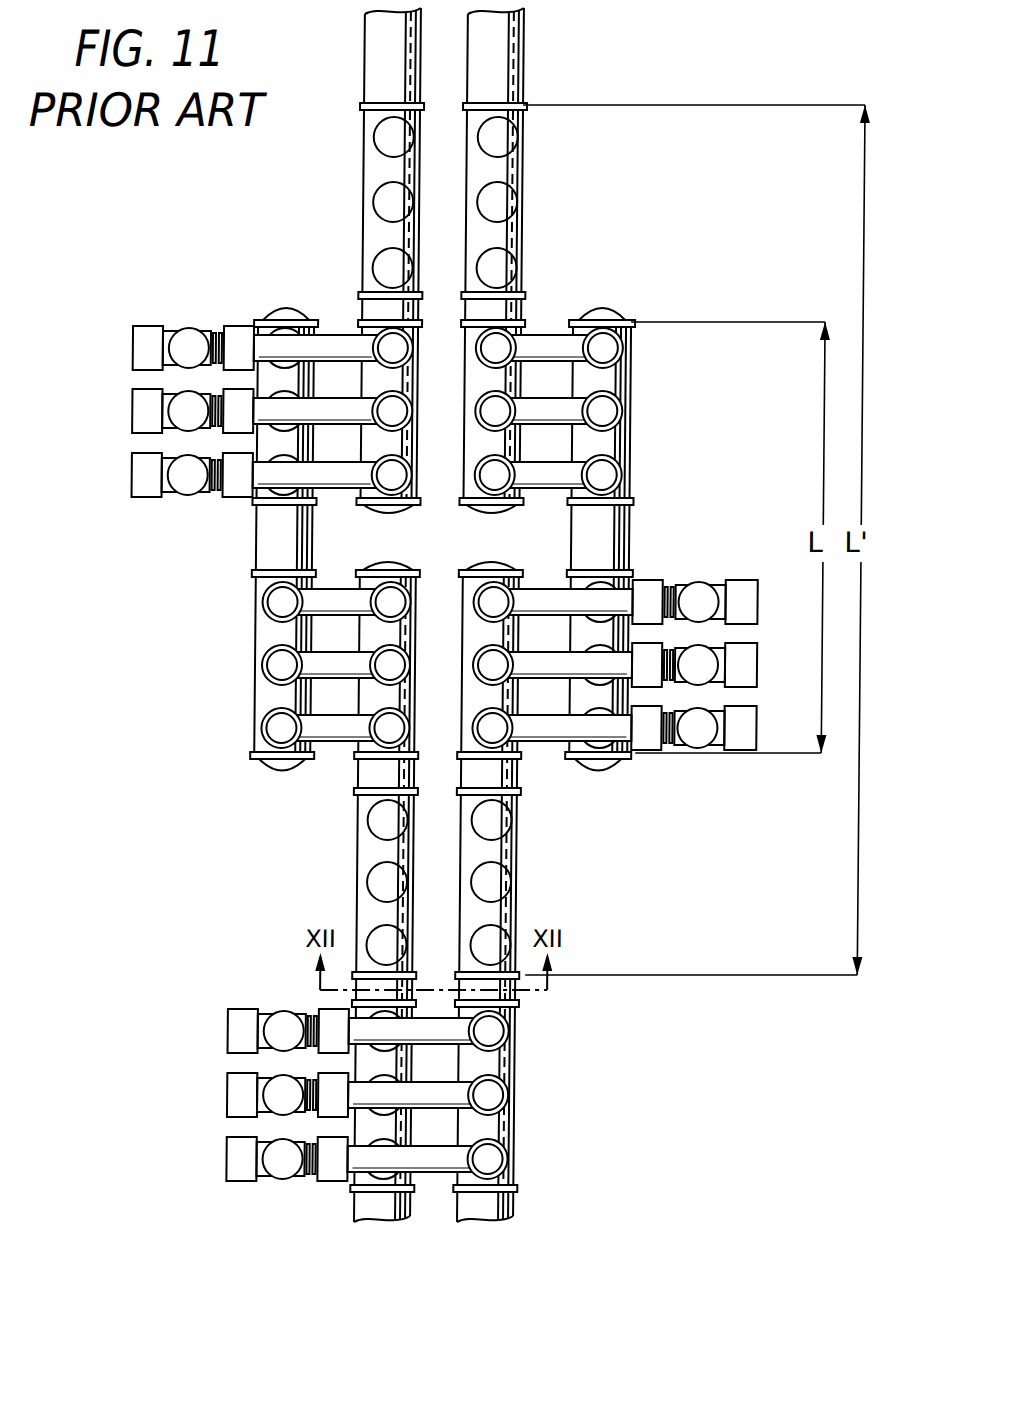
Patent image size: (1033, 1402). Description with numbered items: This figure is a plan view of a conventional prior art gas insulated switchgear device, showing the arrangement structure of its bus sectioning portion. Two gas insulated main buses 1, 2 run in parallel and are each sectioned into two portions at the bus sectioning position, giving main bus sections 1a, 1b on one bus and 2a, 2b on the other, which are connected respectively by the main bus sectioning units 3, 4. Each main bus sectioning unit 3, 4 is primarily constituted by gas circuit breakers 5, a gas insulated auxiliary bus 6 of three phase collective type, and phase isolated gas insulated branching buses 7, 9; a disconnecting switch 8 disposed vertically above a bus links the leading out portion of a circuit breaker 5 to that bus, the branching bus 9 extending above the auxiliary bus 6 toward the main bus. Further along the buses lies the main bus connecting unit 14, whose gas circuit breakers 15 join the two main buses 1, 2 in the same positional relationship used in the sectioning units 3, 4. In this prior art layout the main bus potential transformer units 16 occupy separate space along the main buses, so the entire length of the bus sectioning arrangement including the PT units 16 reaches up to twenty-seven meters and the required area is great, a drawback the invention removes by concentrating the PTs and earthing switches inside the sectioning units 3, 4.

The gas insulated main bus 1 is at (353, 643).
The main bus section 1a is at (378, 93).
The main bus section 1b is at (383, 1214).
The gas insulated main bus 2 is at (515, 643).
The main bus section 2a is at (513, 83).
The main bus section 2b is at (489, 1213).
The main bus sectioning unit 3 is at (76, 435).
The main bus sectioning unit 4 is at (779, 688).
The gas circuit breaker 5 is at (187, 488).
The gas insulated auxiliary bus 6 is at (270, 528).
The gas insulated branching bus 7 is at (550, 340).
The disconnecting switch 8 is at (393, 342).
The gas insulated branching bus 9 is at (288, 345).
The main bus connecting unit 14 is at (186, 1131).
The gas circuit breaker 15 is at (298, 1173).
The main bus potential transformer unit 16 is at (519, 224).